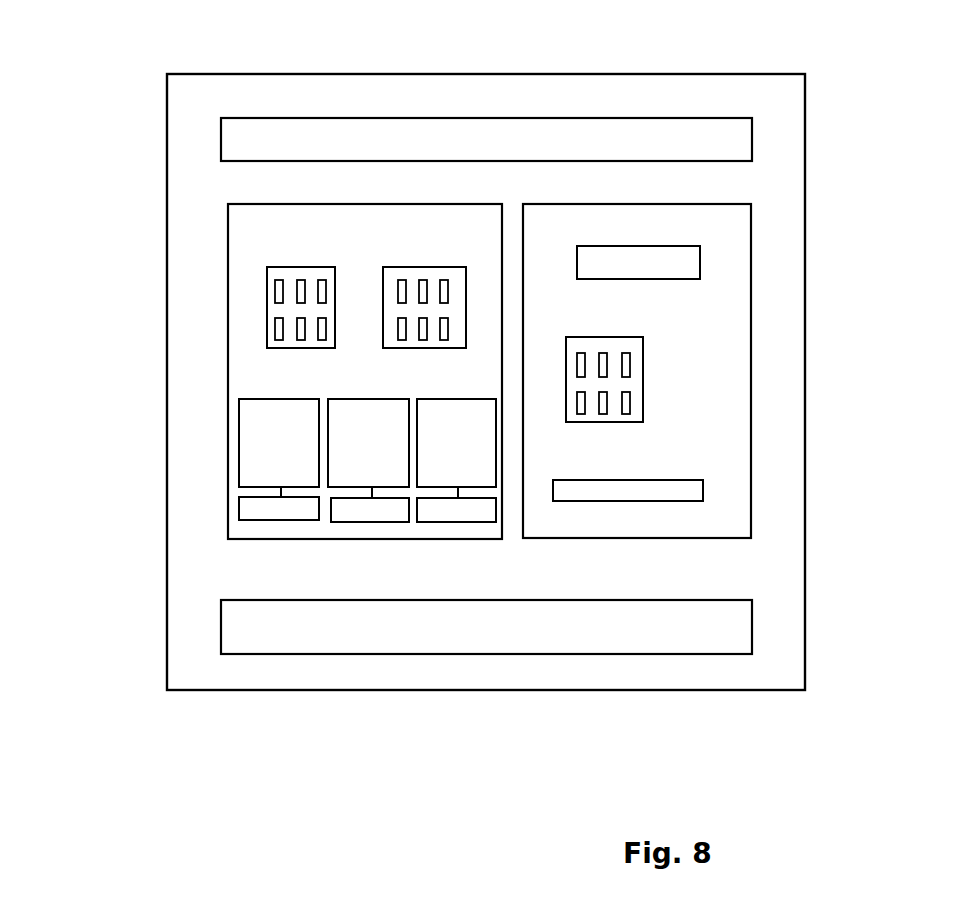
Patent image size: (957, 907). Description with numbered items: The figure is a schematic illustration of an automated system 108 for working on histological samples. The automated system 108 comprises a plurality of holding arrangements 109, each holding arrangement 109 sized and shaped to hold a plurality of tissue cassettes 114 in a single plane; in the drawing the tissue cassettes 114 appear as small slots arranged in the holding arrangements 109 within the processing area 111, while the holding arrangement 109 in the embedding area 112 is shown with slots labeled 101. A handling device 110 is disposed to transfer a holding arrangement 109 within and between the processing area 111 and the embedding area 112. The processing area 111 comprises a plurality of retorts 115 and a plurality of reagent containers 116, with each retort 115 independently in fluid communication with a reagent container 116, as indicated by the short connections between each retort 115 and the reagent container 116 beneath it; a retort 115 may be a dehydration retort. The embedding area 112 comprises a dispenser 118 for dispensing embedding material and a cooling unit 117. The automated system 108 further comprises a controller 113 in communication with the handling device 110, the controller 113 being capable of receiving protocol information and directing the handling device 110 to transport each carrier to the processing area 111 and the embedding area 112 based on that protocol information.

The terminal pins of connector 101 is at (630, 372).
The automated system 108 is at (180, 317).
The holding arrangement 109 is at (425, 270).
The handling device 110 is at (392, 138).
The processing area 111 is at (243, 388).
The embedding area 112 is at (733, 340).
The controller 113 is at (367, 627).
The tissue cassette 114 is at (326, 295).
The retort 115 is at (270, 457).
The reagent container 116 is at (270, 513).
The cooling unit 117 is at (693, 489).
The dispenser 118 is at (693, 259).